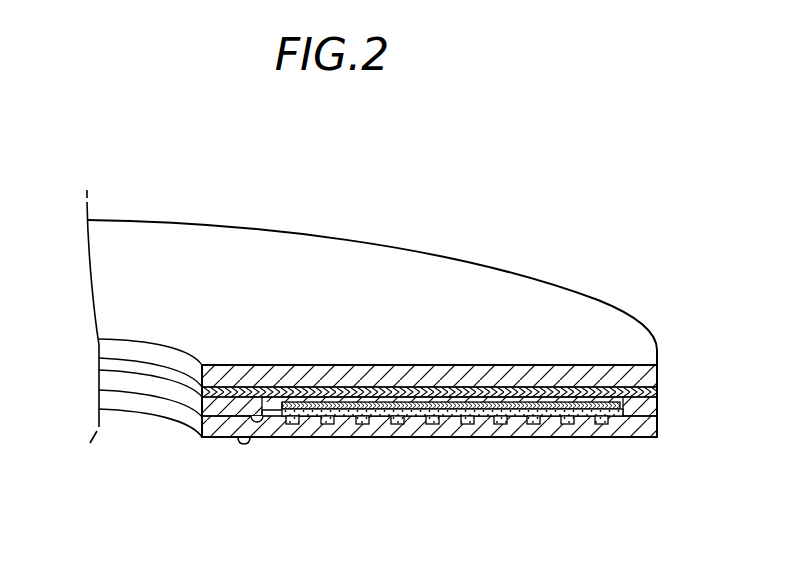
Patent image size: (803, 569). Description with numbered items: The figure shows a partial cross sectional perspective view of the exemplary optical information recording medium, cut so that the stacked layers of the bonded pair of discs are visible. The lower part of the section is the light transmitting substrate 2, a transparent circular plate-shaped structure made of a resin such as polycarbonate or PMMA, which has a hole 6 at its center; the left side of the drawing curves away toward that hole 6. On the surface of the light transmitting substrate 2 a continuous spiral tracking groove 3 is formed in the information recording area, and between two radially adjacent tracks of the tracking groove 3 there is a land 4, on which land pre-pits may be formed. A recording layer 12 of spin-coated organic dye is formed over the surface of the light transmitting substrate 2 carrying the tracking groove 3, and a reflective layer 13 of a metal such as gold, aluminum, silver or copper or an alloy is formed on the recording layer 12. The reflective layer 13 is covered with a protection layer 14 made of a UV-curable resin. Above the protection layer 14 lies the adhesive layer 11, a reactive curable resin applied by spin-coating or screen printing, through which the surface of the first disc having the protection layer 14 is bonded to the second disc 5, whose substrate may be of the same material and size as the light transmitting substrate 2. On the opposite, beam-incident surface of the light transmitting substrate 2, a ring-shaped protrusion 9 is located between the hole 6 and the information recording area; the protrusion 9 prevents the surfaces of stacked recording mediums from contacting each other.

The light transmitting substrate 2 is at (410, 430).
The tracking groove 3 is at (497, 428).
The land 4 is at (553, 432).
The disc 5 is at (572, 294).
The hole 6 is at (123, 403).
The protrusion 9 is at (243, 444).
The adhesive layer 11 is at (378, 377).
The recording layer 12 is at (308, 423).
The reflective layer 13 is at (592, 405).
The protection layer 14 is at (509, 393).